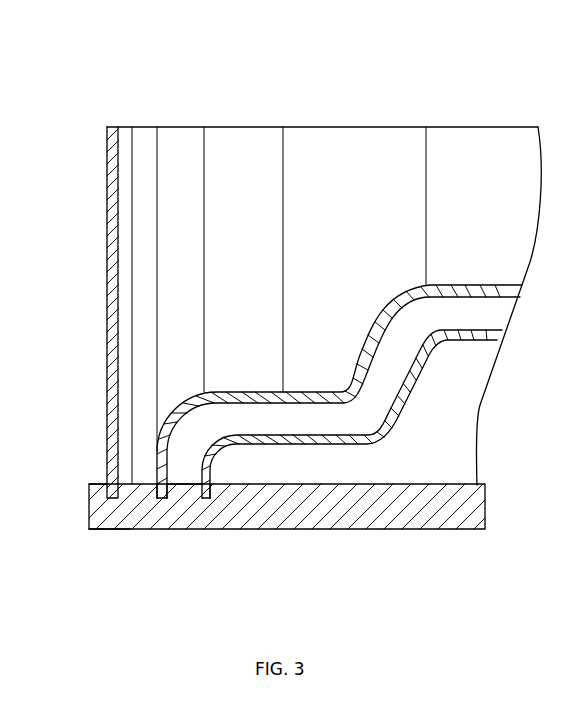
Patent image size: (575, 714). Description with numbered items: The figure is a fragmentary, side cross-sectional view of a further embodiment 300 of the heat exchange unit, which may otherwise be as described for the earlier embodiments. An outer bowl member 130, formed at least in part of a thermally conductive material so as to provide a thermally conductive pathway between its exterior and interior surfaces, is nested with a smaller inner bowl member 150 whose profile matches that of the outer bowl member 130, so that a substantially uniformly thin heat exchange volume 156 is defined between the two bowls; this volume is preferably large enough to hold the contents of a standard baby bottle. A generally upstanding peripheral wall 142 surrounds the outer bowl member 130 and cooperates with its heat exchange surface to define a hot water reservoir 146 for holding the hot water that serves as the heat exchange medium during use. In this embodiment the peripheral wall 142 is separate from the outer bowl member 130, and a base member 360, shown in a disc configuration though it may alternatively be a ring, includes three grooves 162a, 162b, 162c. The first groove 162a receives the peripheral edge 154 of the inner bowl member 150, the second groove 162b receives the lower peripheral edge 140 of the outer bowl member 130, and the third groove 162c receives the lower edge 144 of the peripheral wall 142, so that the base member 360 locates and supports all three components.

The further embodiment 300 is at (514, 41).
The peripheral wall 142 is at (105, 142).
The hot water reservoir 146 is at (298, 235).
The inner bowl member 150 is at (492, 338).
The heat exchange volume 156 is at (411, 322).
The groove 162a is at (210, 492).
The outer bowl member 130 is at (183, 485).
The groove 162b is at (155, 497).
The groove 162c is at (95, 485).
The lower edge 144 is at (105, 512).
The lower peripheral edge 140 is at (167, 503).
The peripheral edge 154 is at (210, 498).
The base member 360 is at (340, 529).